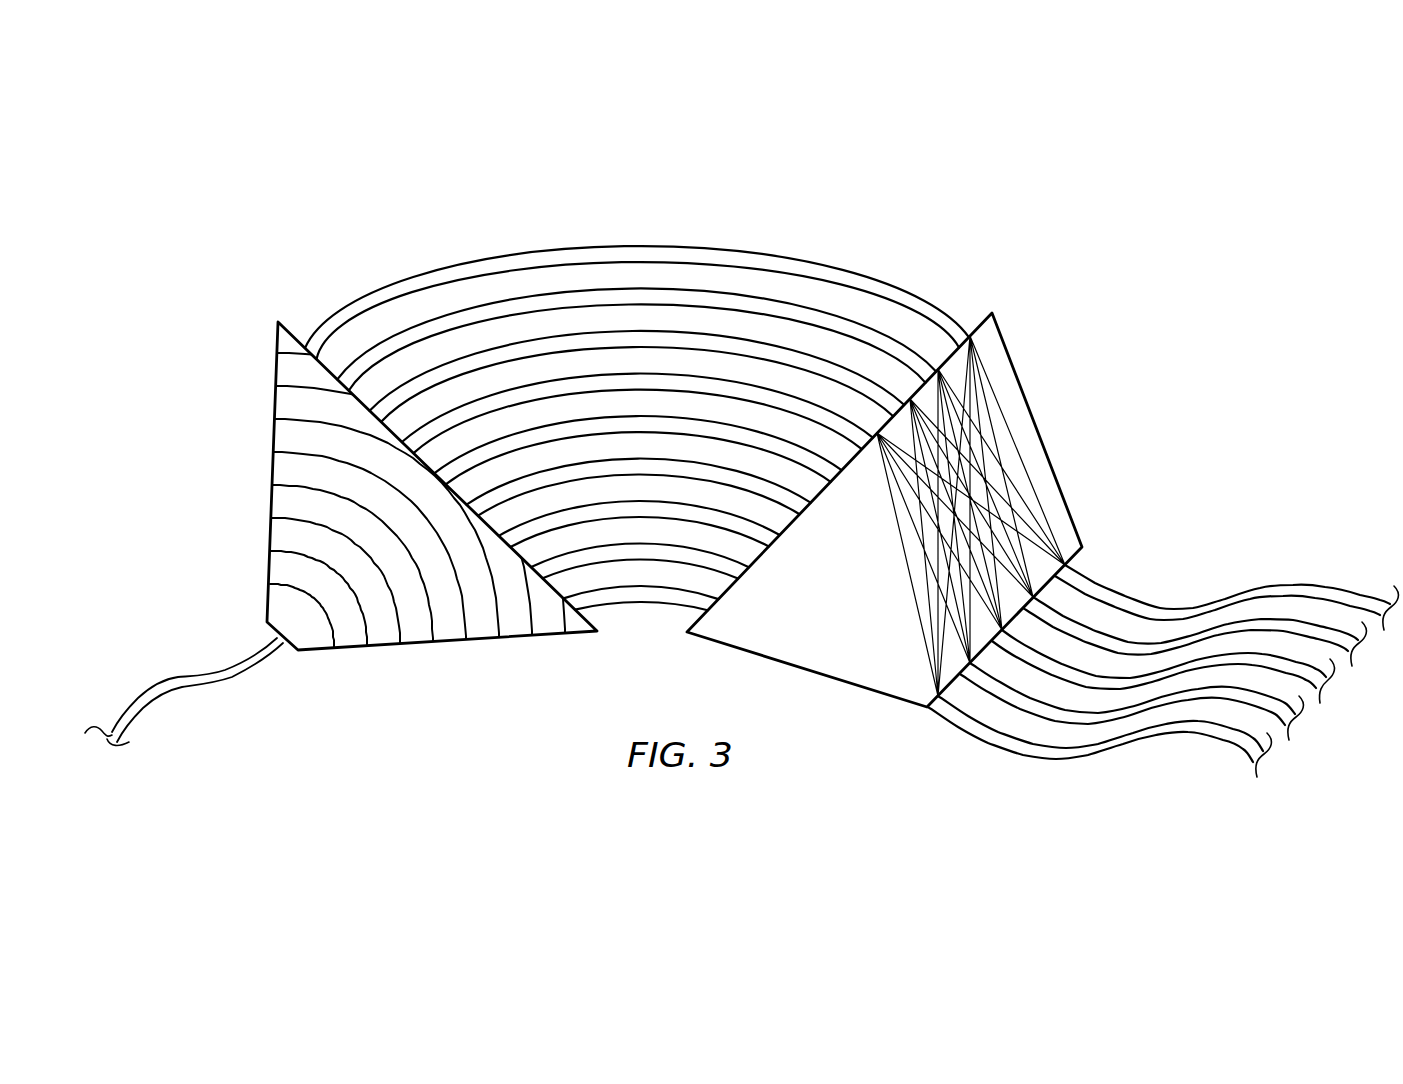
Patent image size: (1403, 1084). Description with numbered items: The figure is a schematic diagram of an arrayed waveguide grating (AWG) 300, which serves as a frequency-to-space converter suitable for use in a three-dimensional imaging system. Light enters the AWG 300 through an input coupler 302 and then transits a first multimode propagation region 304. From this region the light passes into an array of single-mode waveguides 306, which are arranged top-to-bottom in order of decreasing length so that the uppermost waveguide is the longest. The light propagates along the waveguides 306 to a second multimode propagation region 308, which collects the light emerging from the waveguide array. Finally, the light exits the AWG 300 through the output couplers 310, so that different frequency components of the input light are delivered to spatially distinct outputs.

The arrayed waveguide grating (AWG) 300 is at (605, 165).
The input coupler 302 is at (186, 674).
The first multimode propagation region 304 is at (275, 412).
The single-mode waveguides 306 is at (640, 624).
The second multimode propagation region 308 is at (1032, 414).
The output couplers 310 is at (1208, 582).